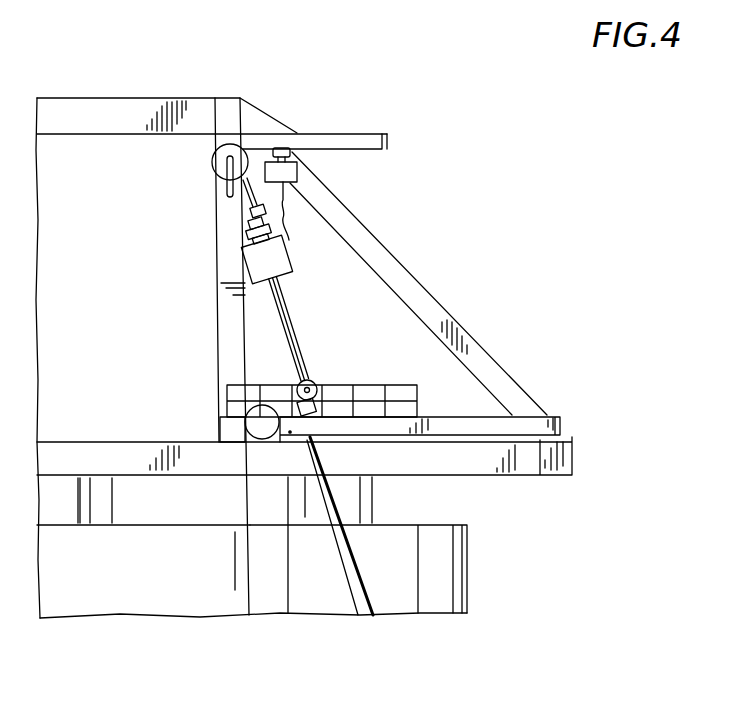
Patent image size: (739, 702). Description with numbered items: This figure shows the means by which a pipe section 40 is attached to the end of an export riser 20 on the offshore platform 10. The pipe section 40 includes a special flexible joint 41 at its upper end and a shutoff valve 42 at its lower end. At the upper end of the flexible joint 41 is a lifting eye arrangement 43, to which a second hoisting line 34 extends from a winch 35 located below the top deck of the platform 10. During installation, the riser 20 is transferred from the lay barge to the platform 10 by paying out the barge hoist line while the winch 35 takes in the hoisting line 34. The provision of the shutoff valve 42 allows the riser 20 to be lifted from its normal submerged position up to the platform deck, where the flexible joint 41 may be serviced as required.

The platform 10 is at (458, 273).
The export riser 20 is at (365, 578).
The second hoisting line 34 is at (265, 192).
The winch 35 is at (243, 137).
The pipe section 40 is at (297, 323).
The flexible joint 41 is at (297, 257).
The shutoff valve 42 is at (318, 380).
The lifting eye arrangement 43 is at (282, 206).